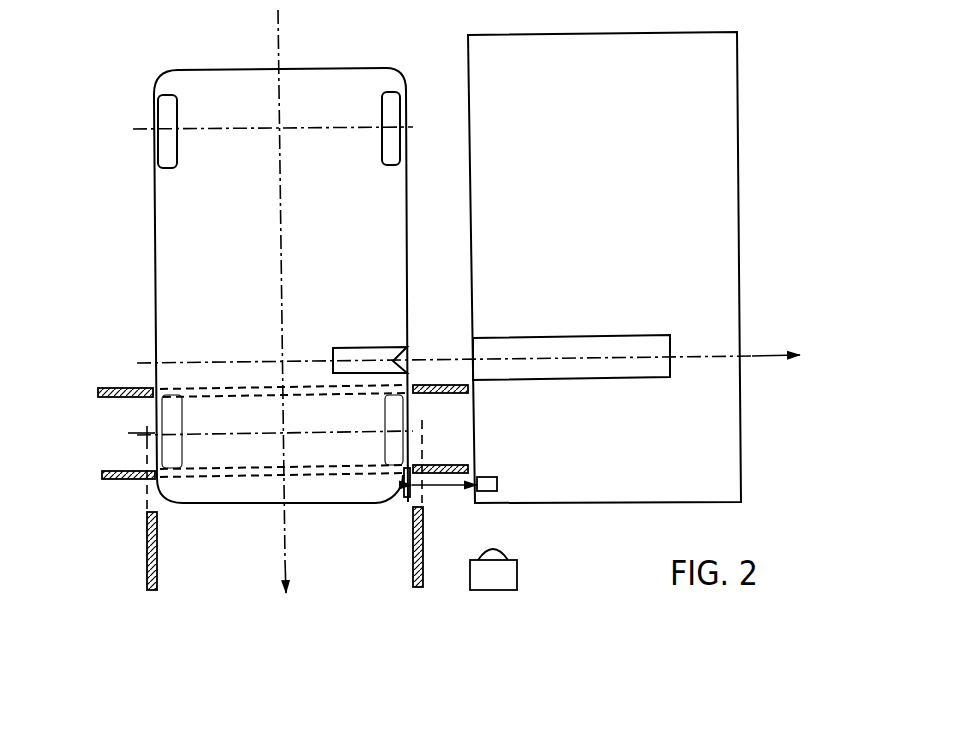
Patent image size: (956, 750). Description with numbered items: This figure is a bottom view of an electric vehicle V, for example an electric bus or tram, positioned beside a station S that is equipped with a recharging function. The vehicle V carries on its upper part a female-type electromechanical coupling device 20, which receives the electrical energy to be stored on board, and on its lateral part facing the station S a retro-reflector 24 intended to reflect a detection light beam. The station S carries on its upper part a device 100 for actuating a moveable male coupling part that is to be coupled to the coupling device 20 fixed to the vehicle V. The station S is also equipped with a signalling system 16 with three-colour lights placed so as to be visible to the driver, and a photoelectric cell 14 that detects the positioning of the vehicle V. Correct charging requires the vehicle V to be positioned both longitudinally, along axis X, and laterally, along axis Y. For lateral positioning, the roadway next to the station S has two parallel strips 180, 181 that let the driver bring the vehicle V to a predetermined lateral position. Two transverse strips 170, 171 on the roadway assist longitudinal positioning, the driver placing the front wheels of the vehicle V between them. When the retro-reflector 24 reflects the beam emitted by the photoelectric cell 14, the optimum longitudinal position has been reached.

The electric vehicle V is at (157, 242).
The station S is at (738, 153).
The electromechanical coupling device 20 is at (380, 347).
The retro-reflector 24 is at (405, 500).
The device for actuating a moveable electromechanical coupling part 100 is at (675, 345).
The photoelectric cell 14 is at (497, 488).
The signalling system 16 is at (517, 575).
The transverse strip 170 is at (110, 398).
The transverse strip 171 is at (112, 480).
The parallel strip 180 is at (147, 580).
The parallel strip 181 is at (423, 520).